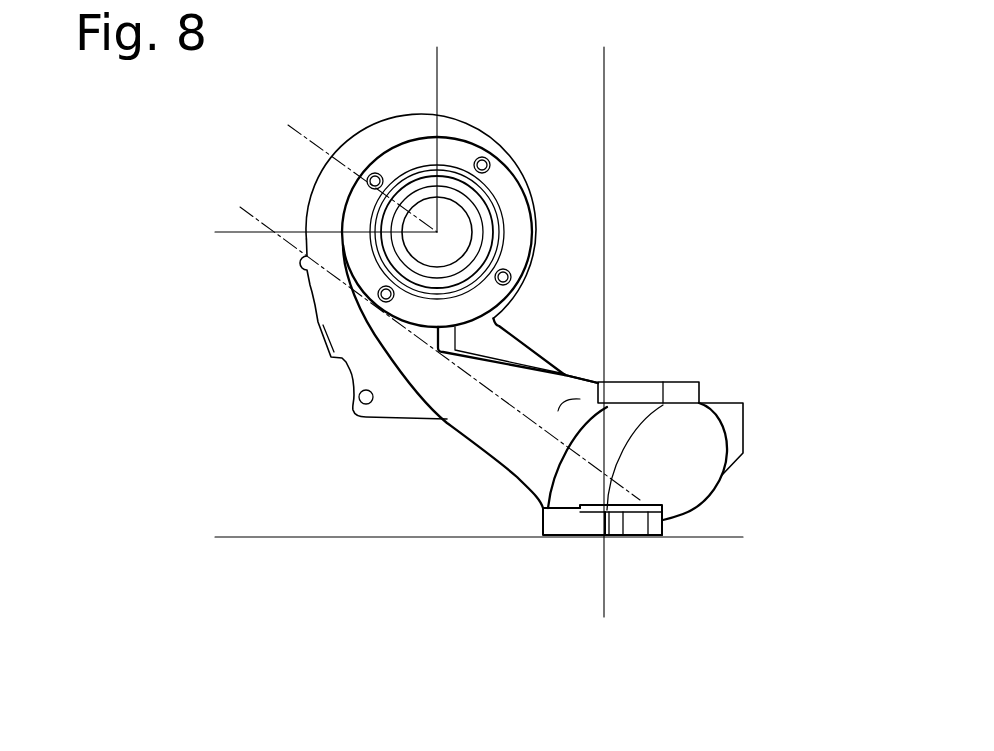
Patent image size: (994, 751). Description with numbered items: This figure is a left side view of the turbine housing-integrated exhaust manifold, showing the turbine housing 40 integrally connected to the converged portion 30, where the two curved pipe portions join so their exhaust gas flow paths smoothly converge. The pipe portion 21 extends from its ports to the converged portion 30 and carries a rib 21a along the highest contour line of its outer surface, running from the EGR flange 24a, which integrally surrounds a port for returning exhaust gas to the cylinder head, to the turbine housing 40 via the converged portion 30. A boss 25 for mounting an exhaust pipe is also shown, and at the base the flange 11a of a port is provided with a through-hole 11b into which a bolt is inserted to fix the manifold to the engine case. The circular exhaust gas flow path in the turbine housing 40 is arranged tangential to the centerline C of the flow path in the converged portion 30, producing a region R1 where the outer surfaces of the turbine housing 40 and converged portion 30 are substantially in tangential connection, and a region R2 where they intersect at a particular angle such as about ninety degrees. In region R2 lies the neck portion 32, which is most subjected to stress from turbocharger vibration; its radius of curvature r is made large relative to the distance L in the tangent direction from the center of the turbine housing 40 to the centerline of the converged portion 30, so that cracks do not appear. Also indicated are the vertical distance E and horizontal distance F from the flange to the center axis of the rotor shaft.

The turbine housing 40 is at (373, 145).
The converged portion 30 is at (482, 422).
The neck portion 32 is at (505, 322).
The rib 21a is at (483, 352).
The EGR flange 24a is at (680, 392).
The boss 25 is at (737, 421).
The pipe portion 21 is at (692, 490).
The flange 11a is at (572, 520).
The through-hole 11b is at (637, 528).
The centerline C is at (460, 367).
The vertical distance E is at (280, 236).
The horizontal distance F is at (600, 83).
The distance L is at (306, 141).
The radius of curvature r is at (503, 322).
The region R1 is at (336, 375).
The region R2 is at (534, 339).